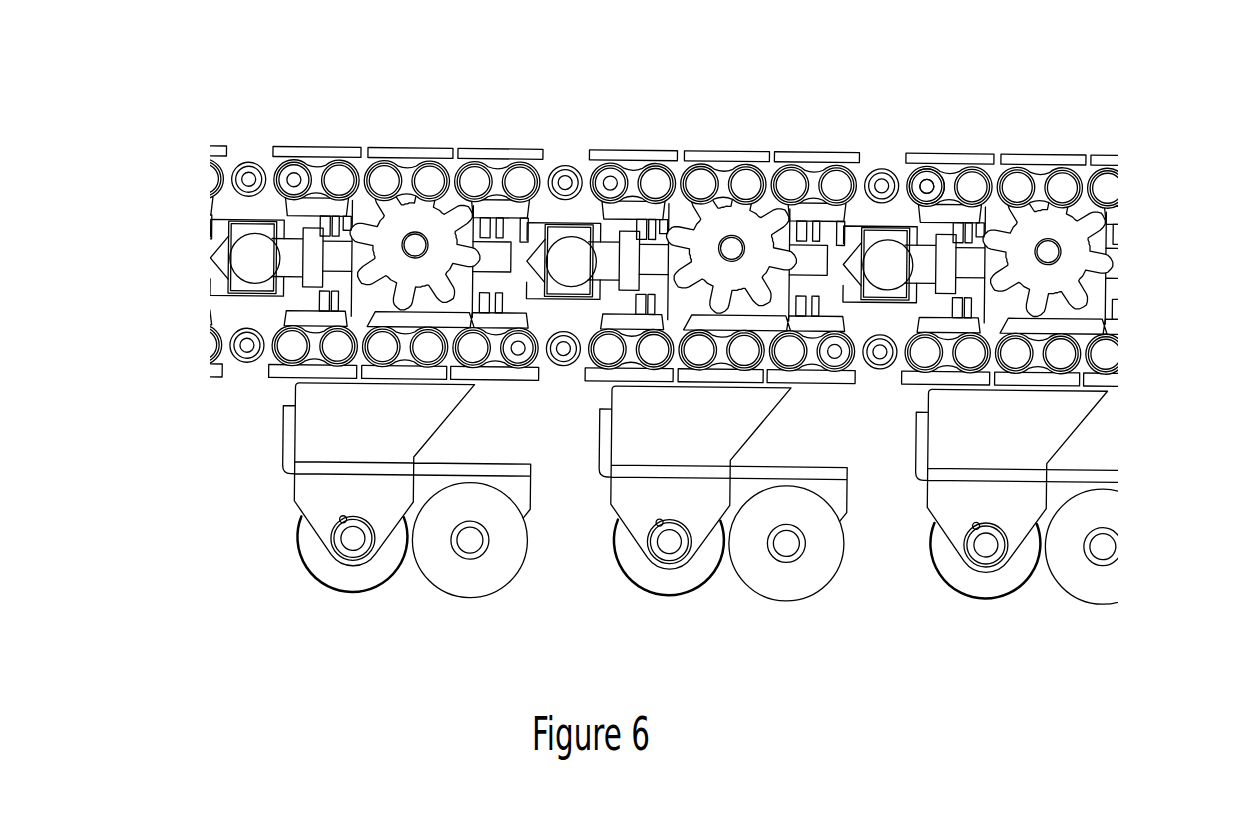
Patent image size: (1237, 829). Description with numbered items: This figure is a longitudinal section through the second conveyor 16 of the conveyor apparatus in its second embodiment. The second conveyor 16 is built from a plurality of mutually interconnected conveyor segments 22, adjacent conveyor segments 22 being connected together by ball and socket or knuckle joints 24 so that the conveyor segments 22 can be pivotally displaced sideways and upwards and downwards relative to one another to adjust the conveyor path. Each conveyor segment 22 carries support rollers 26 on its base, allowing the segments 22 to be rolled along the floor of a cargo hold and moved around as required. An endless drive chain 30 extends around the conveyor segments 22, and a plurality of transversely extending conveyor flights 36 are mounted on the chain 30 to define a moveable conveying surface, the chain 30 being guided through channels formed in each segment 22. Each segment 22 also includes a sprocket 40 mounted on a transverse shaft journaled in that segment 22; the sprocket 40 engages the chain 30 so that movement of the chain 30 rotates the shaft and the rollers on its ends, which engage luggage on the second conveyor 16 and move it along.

The second conveyor 16 is at (610, 374).
The conveyor segment 22 is at (310, 442).
The ball and socket or knuckle joint 24 is at (889, 273).
The support roller 26 is at (763, 572).
The endless drive chain 30 is at (922, 192).
The conveyor flight 36 is at (493, 157).
The sprocket 40 is at (742, 220).